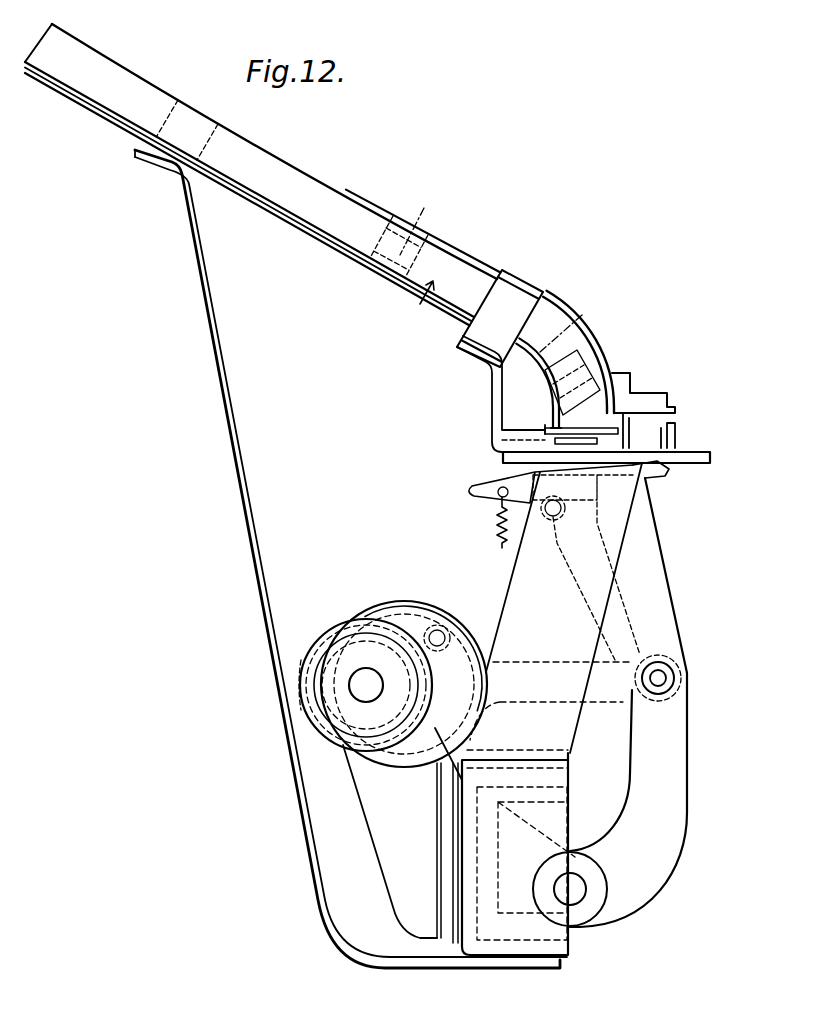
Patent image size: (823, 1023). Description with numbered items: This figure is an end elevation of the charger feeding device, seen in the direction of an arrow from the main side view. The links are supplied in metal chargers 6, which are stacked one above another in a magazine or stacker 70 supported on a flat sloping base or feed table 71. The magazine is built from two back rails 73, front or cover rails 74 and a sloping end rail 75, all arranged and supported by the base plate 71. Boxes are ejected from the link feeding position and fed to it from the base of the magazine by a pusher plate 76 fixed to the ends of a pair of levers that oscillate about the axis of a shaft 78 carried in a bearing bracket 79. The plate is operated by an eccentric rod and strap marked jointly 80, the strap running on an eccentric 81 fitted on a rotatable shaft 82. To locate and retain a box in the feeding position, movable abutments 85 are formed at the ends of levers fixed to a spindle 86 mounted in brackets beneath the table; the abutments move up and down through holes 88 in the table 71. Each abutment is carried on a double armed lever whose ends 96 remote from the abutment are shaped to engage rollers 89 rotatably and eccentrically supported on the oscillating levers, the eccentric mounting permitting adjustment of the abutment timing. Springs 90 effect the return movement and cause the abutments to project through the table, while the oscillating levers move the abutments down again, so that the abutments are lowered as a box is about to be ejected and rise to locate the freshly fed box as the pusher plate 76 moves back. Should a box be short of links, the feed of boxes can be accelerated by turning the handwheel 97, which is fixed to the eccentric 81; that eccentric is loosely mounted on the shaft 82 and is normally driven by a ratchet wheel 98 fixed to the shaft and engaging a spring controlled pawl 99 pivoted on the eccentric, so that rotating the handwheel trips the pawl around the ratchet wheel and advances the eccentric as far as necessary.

The charger 6 is at (498, 270).
The magazine or stacker 70 is at (428, 307).
The base or feed table 71 is at (690, 464).
The back rails 73 is at (286, 228).
The front or cover rails 74 is at (540, 372).
The sloping end rail 75 is at (285, 170).
The pusher plate 76 is at (545, 430).
The shaft 78 is at (577, 885).
The bearing bracket 79 is at (567, 935).
The eccentric rod and strap 80 is at (523, 662).
The eccentric 81 is at (443, 722).
The rotatable shaft 82 is at (367, 702).
The movable abutments 85 is at (657, 475).
The spindle 86 is at (628, 512).
The holes 88 is at (675, 450).
The rollers 89 is at (557, 543).
The springs 90 is at (496, 519).
The lever ends 96 is at (470, 488).
The handwheel 97 is at (343, 627).
The ratchet wheel 98 is at (310, 700).
The pawl 99 is at (451, 633).